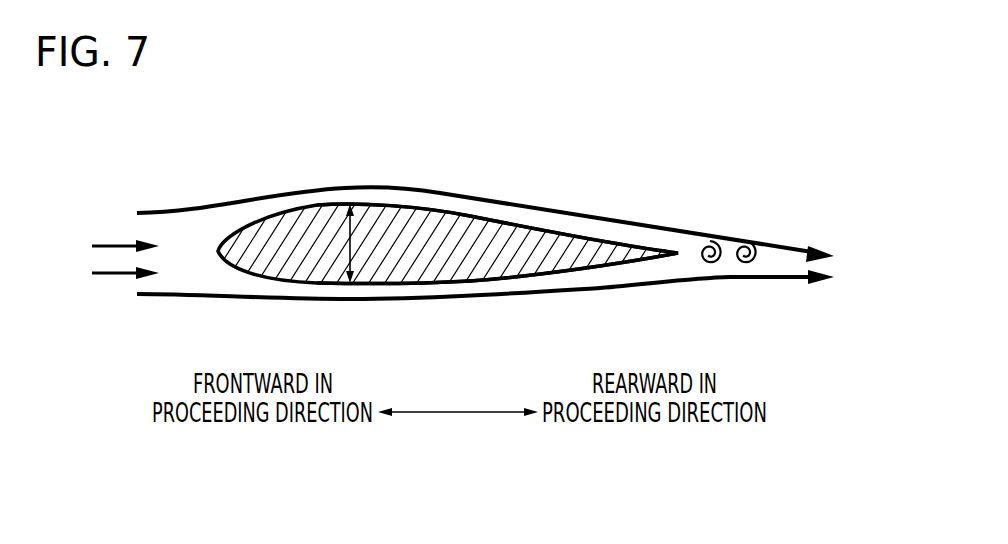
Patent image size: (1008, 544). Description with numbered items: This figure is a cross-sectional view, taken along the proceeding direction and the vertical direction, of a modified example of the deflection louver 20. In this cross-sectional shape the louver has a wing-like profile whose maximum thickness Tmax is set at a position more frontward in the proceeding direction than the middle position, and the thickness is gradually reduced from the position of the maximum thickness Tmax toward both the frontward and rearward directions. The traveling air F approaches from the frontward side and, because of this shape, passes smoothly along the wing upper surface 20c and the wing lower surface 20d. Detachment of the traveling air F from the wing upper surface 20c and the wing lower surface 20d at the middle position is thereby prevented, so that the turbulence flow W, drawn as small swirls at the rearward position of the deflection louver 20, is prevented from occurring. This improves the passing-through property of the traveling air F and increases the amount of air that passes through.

The deflection louver 20 is at (312, 198).
The wing upper surface 20c is at (493, 215).
The wing lower surface 20d is at (496, 278).
The maximum thickness Tmax is at (352, 242).
The traveling air F is at (90, 233).
The turbulence flow W is at (708, 264).